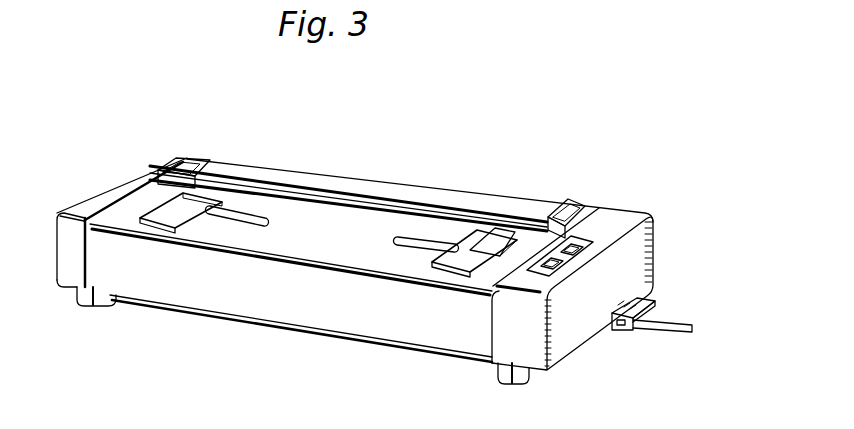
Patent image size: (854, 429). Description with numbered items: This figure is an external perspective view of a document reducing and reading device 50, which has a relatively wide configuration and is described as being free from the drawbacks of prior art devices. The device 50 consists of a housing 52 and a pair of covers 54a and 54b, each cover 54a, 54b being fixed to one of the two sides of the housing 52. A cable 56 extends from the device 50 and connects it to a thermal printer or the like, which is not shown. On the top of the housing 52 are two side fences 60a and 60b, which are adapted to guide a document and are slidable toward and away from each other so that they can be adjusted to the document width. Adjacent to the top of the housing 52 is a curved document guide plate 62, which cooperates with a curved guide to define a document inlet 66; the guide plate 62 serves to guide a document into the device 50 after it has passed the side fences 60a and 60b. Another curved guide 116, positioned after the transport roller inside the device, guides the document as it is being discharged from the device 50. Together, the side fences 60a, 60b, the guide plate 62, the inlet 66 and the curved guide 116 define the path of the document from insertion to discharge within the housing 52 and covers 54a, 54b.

The document reducing and reading device 50 is at (598, 156).
The housing 52 is at (300, 293).
The cover 54a is at (70, 268).
The cover 54b is at (572, 313).
The cable 56 is at (660, 333).
The side fence 60a is at (167, 220).
The side fence 60b is at (513, 232).
The document guide plate 62 is at (397, 205).
The document inlet 66 is at (344, 196).
The curved guide 116 is at (377, 342).